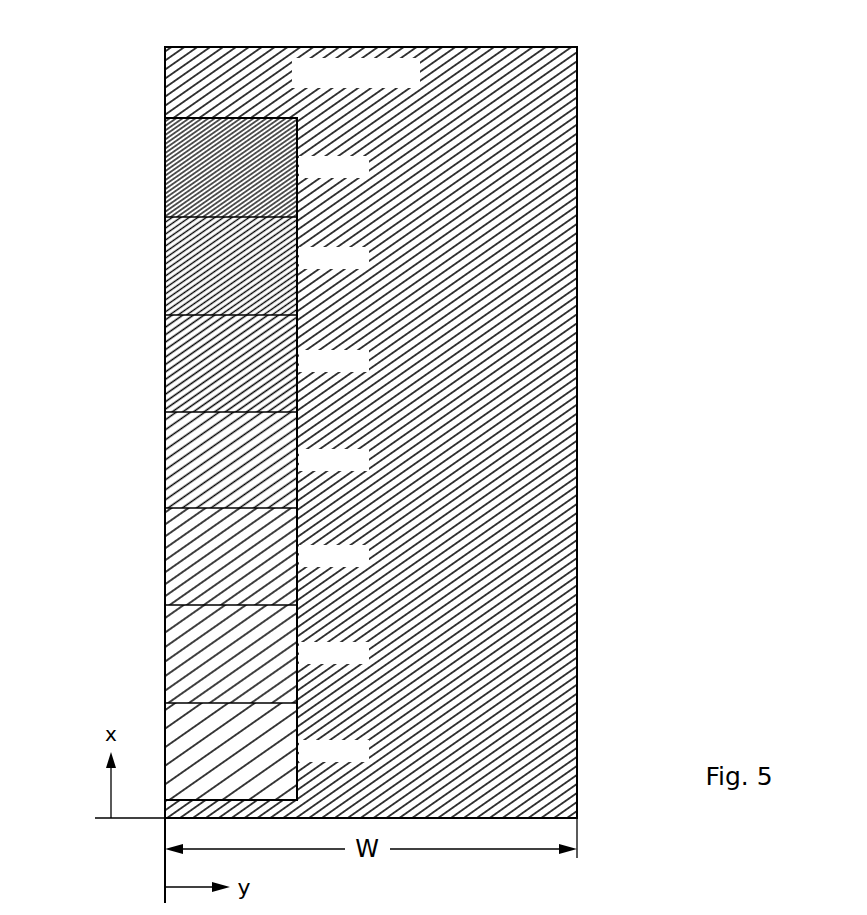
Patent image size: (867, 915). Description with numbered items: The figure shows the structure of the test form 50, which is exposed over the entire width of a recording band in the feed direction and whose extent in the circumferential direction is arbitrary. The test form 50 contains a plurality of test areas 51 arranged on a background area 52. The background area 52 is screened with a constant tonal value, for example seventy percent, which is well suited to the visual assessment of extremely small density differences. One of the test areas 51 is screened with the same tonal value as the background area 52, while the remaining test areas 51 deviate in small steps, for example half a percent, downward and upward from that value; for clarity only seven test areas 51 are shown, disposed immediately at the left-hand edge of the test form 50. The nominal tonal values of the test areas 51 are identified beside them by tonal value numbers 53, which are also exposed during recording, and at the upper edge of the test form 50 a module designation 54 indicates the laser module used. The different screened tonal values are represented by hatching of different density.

The test form 50 is at (393, 432).
The test areas 51 is at (195, 372).
The background area 52 is at (527, 440).
The tonal value numbers 53 is at (373, 358).
The module designation 54 is at (297, 74).